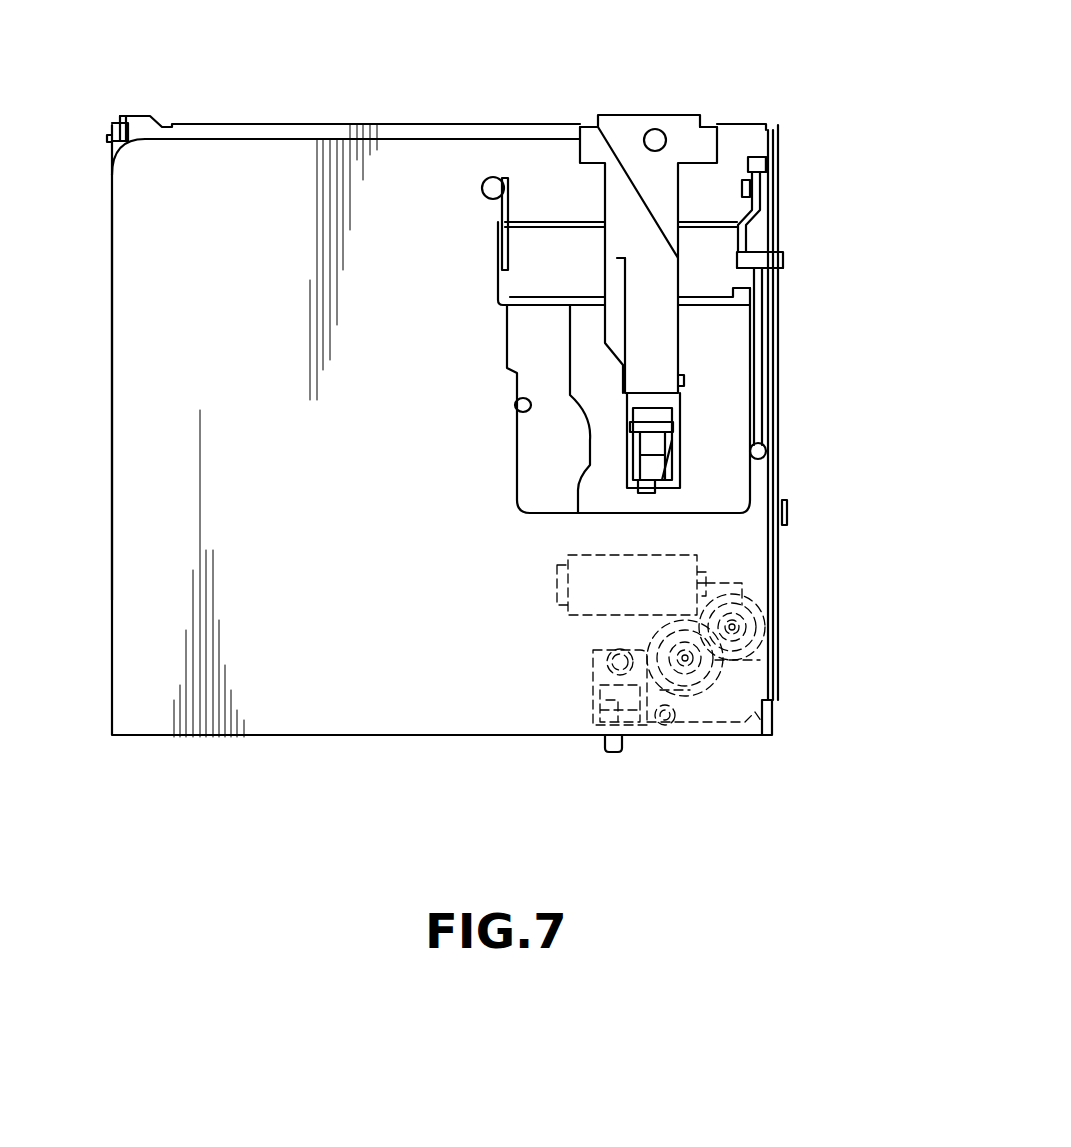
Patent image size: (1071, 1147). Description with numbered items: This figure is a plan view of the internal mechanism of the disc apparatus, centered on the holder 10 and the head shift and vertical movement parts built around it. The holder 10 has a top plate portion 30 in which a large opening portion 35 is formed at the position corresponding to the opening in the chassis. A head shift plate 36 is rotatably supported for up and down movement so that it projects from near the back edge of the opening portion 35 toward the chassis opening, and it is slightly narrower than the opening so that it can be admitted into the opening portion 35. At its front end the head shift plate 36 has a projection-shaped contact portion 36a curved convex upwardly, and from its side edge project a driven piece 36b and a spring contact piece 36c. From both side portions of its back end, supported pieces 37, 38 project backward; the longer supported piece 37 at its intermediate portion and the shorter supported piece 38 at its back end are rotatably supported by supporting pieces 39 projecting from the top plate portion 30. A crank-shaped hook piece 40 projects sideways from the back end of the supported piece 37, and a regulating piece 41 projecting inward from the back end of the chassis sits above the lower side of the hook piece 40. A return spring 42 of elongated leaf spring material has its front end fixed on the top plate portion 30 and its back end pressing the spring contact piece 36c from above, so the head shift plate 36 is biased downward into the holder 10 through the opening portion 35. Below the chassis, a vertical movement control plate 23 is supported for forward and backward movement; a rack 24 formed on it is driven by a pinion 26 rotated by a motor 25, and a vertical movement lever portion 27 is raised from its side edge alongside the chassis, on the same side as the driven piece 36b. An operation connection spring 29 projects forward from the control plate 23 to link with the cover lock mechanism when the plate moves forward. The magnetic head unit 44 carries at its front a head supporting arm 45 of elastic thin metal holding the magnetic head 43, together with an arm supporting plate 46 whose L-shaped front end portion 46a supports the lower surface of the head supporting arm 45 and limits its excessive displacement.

The holder 10 is at (278, 714).
The vertical movement control plate 23 is at (745, 705).
The rack 24 is at (690, 700).
The motor 25 is at (590, 615).
The pinion 26 is at (708, 700).
The vertical movement lever portion 27 is at (780, 420).
The operation connection spring 29 is at (612, 752).
The top plate portion 30 is at (135, 350).
The opening portion 35 is at (517, 405).
The head shift plate 36 is at (523, 275).
The contact portion 36a is at (540, 318).
The driven piece 36b is at (773, 245).
The spring contact piece 36c is at (783, 268).
The supported piece 37 is at (498, 240).
The supported piece 38 is at (783, 180).
The supporting piece 39 is at (510, 178).
The hook piece 40 is at (752, 165).
The regulating piece 41 is at (772, 158).
The return spring 42 is at (765, 312).
The magnetic head 43 is at (648, 445).
The magnetic head unit 44 is at (622, 128).
The head supporting arm 45 is at (670, 345).
The arm supporting plate 46 is at (618, 338).
The front end portion 46a is at (688, 382).